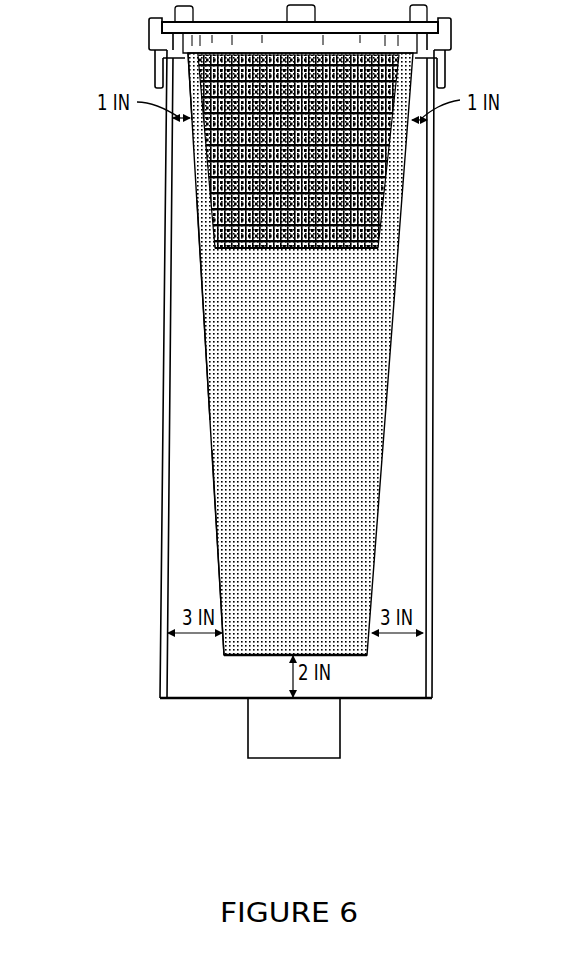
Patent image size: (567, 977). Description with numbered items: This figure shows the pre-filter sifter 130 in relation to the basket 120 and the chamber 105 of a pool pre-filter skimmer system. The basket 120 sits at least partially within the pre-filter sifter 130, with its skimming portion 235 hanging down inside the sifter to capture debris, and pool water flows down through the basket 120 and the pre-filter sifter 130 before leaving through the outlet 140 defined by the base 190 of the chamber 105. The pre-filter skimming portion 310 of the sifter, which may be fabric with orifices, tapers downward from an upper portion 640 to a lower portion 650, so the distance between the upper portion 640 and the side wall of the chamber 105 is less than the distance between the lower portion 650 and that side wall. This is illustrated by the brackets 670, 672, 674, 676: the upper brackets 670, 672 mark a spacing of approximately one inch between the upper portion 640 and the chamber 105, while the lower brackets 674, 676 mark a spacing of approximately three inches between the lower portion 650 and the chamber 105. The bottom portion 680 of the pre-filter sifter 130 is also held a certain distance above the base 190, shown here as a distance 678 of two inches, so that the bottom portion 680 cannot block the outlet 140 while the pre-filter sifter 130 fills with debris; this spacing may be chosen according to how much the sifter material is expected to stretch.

The chamber 105 is at (433, 355).
The basket 120 is at (385, 188).
The pre-filter sifter 130 is at (385, 410).
The outlet 140 is at (318, 704).
The base 190 is at (377, 698).
The skimming portion 235 is at (380, 237).
The pre-filter skimming portion 310 is at (205, 365).
The upper portion 640 is at (187, 92).
The lower portion 650 is at (215, 525).
The bracket 670 is at (185, 112).
The bracket 672 is at (415, 115).
The bracket 674 is at (197, 636).
The bracket 676 is at (387, 636).
The distance 678 is at (283, 675).
The bottom portion 680 is at (333, 651).